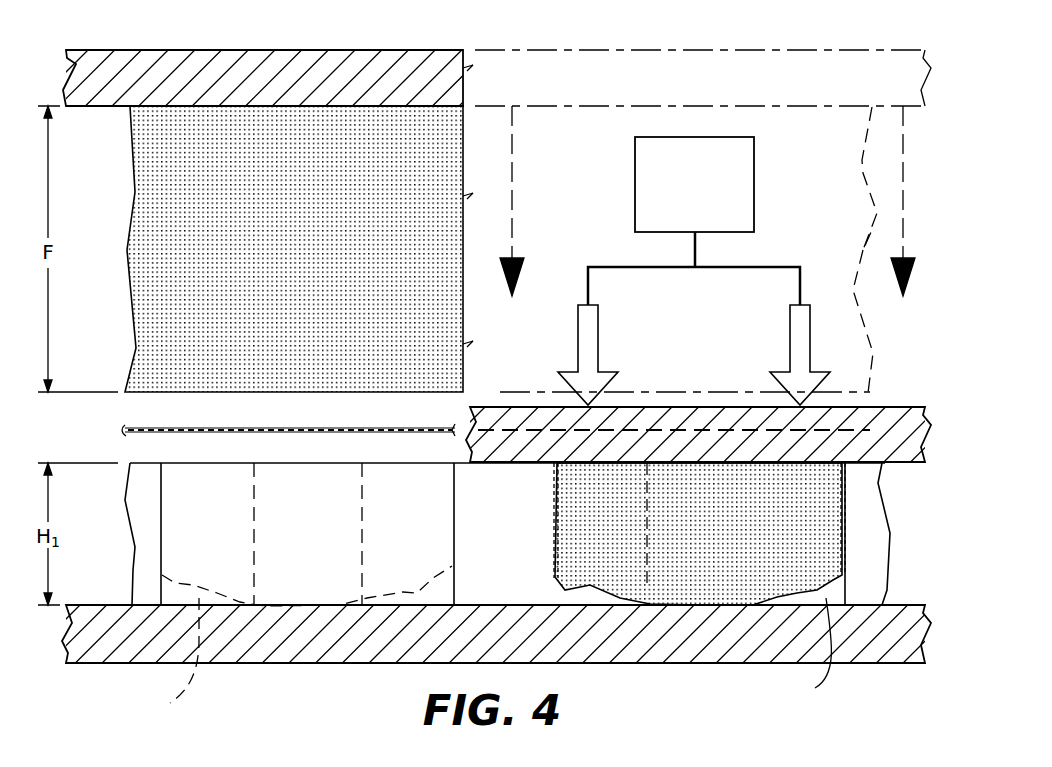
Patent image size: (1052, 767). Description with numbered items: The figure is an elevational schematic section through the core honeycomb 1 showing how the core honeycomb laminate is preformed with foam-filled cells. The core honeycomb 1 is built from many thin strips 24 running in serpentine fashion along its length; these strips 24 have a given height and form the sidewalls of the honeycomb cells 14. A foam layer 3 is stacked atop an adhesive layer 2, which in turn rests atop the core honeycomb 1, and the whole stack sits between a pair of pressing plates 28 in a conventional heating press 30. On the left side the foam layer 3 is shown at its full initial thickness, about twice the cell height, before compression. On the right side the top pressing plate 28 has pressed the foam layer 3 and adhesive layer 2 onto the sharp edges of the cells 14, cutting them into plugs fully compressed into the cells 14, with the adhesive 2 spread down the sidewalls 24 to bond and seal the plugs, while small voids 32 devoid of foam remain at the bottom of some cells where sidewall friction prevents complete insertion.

The pressing plate 28 is at (128, 50).
The foam layer 3 is at (291, 267).
The adhesive layer 2 is at (152, 427).
The core honeycomb 1 is at (128, 520).
The honeycomb cell 14 is at (296, 547).
The strip 24 is at (133, 571).
The void 32 is at (484, 658).
The heating press 30 is at (754, 150).